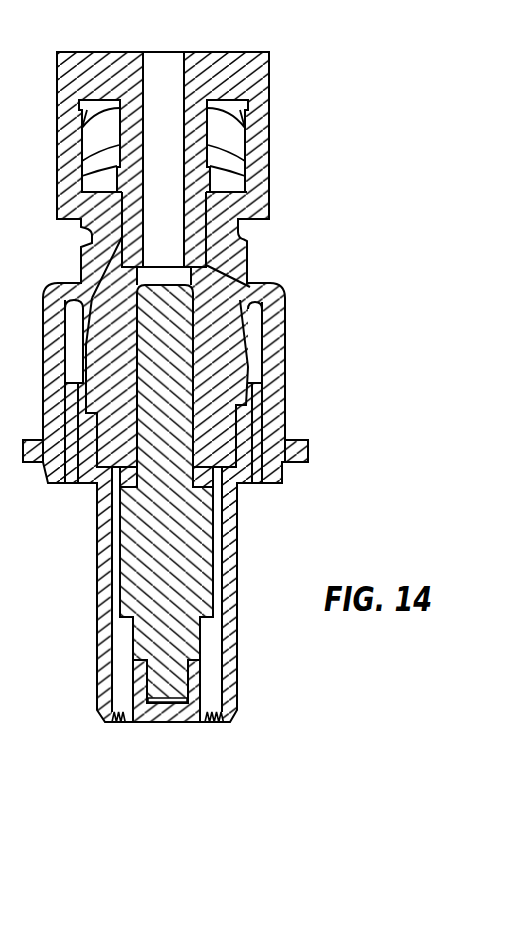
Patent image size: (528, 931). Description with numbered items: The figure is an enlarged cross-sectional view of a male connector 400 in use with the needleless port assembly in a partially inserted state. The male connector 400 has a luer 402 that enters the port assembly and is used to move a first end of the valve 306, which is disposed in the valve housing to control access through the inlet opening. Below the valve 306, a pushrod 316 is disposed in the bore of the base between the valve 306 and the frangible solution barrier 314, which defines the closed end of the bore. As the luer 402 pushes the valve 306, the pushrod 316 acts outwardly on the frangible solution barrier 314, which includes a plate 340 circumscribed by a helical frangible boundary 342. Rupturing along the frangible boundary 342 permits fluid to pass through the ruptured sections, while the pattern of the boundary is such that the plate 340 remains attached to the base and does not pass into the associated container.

The male connector 400 is at (298, 121).
The luer 402 is at (188, 245).
The valve 306 is at (218, 369).
The pushrod 316 is at (180, 587).
The frangible solution barrier 314 is at (237, 718).
The plate 340 is at (160, 722).
The frangible boundary 342 is at (116, 724).